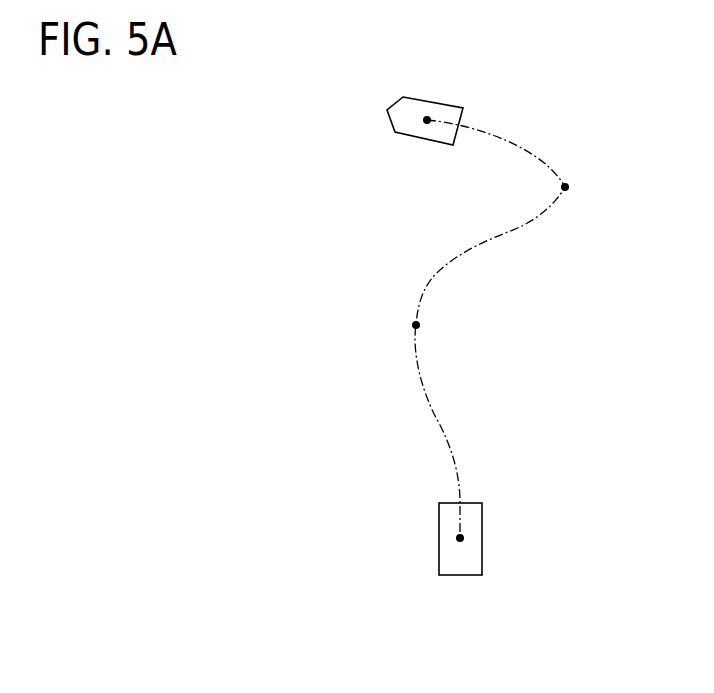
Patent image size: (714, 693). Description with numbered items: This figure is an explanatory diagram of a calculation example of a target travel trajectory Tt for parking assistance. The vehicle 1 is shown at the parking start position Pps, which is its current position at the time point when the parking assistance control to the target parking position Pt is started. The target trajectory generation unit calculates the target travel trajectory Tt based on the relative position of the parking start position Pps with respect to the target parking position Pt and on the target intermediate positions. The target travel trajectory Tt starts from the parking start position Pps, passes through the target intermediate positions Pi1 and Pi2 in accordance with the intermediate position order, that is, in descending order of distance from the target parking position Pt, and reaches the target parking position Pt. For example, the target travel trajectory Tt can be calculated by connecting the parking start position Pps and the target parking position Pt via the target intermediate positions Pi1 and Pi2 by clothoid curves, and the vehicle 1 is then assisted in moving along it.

The vehicle 1 is at (397, 103).
The parking start position Pps is at (428, 113).
The target intermediate position Pi1 is at (570, 187).
The target intermediate position Pi2 is at (411, 325).
The target parking position Pt is at (465, 538).
The target travel trajectory Tt is at (507, 232).